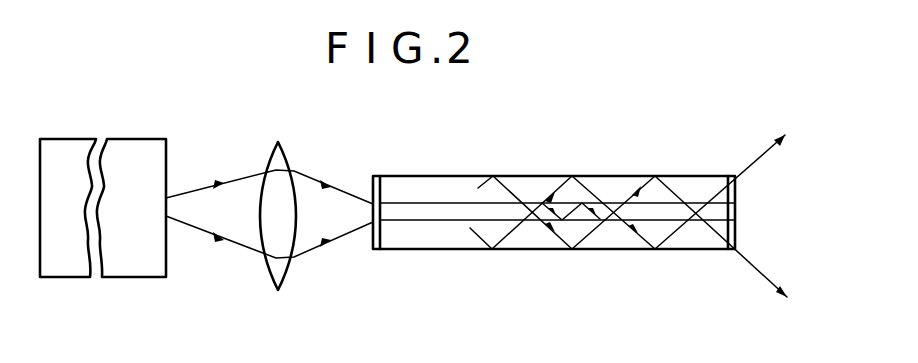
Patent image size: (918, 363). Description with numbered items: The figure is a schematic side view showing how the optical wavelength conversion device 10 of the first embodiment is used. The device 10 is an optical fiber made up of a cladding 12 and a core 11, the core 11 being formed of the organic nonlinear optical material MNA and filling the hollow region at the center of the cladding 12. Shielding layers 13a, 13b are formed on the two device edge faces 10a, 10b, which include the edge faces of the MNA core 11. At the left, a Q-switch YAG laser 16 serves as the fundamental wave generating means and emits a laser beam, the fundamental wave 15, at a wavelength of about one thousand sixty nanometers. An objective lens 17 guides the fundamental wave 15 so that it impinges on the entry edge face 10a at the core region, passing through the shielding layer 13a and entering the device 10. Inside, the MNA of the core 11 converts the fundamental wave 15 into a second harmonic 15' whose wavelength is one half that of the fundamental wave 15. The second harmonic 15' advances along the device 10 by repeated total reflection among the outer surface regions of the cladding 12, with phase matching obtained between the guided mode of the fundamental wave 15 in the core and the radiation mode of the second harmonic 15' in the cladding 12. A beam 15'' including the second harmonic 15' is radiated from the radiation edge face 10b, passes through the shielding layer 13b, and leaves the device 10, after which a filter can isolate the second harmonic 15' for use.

The optical wavelength conversion device 10 is at (597, 155).
The entry edge face 10a is at (380, 204).
The radiation edge face 10b is at (735, 205).
The core 11 is at (455, 213).
The cladding 12 is at (687, 183).
The shielding layer 13a is at (372, 234).
The shielding layer 13b is at (735, 240).
The fundamental wave 15 is at (269, 185).
The second harmonic 15' is at (628, 214).
The radiated beam 15'' is at (754, 203).
The Q-switch YAG laser 16 is at (137, 138).
The objective lens 17 is at (272, 155).